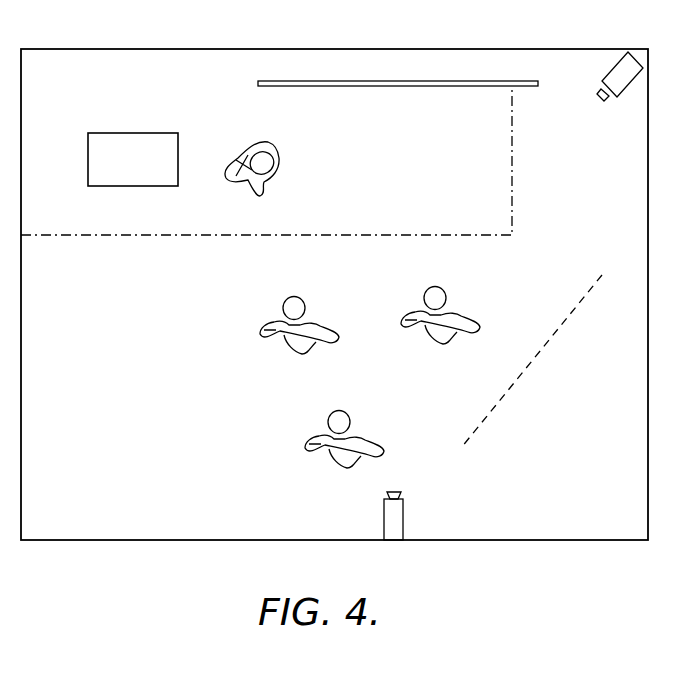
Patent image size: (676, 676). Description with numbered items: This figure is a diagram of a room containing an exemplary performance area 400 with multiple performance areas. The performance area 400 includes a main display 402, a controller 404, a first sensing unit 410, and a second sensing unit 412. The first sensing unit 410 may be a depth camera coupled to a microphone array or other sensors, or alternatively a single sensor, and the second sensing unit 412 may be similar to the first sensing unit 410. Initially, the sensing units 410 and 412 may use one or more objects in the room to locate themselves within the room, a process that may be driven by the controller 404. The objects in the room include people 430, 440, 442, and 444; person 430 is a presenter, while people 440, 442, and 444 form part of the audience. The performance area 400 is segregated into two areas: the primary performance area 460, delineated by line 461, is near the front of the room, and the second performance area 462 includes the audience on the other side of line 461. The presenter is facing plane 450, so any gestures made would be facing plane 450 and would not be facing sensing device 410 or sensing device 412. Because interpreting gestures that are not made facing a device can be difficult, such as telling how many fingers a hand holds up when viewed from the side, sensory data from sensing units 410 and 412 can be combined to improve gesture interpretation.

The performance area 400 is at (223, 51).
The main display 402 is at (412, 81).
The controller 404 is at (140, 133).
The first sensing unit 410 is at (619, 96).
The second sensing unit 412 is at (405, 517).
The person 430 is at (263, 143).
The person 440 is at (319, 318).
The person 442 is at (459, 309).
The person 444 is at (362, 429).
The plane 450 is at (528, 367).
The primary performance area 460 is at (352, 180).
The line 461 is at (386, 236).
The second performance area 462 is at (173, 374).